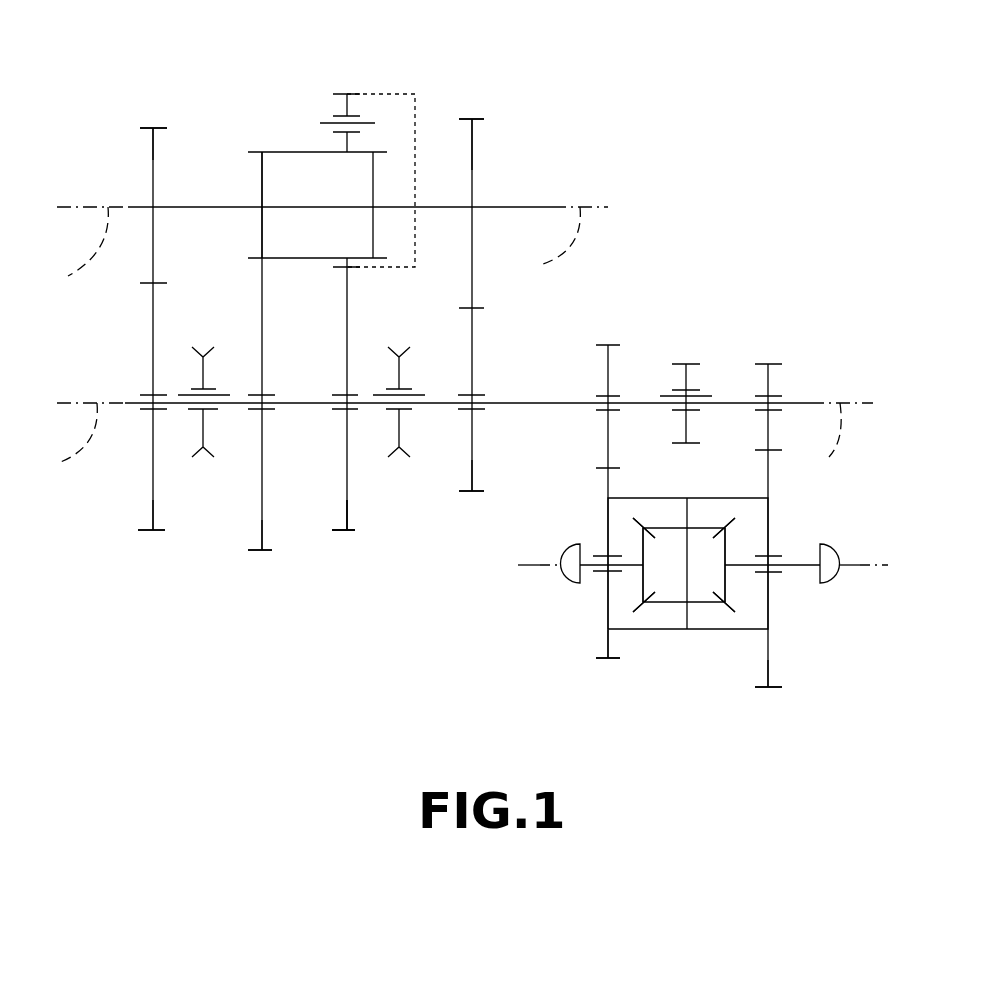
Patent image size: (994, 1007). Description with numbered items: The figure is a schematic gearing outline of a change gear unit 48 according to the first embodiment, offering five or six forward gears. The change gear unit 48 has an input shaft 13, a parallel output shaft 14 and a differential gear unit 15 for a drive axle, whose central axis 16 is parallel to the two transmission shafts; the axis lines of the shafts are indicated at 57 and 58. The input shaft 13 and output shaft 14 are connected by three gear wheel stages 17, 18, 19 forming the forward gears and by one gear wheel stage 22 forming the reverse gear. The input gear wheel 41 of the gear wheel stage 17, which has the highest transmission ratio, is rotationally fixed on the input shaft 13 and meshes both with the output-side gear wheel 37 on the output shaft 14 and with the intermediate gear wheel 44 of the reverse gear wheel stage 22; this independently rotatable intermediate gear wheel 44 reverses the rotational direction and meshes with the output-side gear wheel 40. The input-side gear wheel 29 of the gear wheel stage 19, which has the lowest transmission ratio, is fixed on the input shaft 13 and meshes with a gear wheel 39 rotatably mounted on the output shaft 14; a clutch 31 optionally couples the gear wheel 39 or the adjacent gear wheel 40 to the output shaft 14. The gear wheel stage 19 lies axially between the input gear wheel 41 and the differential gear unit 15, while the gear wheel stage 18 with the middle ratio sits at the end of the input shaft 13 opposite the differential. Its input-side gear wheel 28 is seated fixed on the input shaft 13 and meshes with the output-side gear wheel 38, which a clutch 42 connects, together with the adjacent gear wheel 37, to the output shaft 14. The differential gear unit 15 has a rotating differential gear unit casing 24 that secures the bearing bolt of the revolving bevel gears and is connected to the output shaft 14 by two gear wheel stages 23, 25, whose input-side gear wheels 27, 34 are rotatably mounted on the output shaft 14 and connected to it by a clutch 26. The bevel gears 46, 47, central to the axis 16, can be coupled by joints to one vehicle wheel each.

The input shaft 13 is at (554, 197).
The output shaft 14 is at (526, 399).
The differential gear unit 15 is at (629, 572).
The central axis 16 is at (541, 566).
The gear wheel stage 17 is at (264, 144).
The gear wheel stage 18 is at (156, 118).
The gear wheel stage 19 is at (473, 101).
The gear wheel stage 22 is at (327, 551).
The gear wheel stage 23 is at (602, 667).
The differential gear unit casing 24 is at (687, 498).
The gear wheel stage 25 is at (772, 698).
The clutch 26 is at (695, 344).
The input-side gear wheel 27 is at (602, 343).
The input-side gear wheel 28 is at (153, 163).
The input-side gear wheel 29 is at (473, 168).
The clutch 31 is at (397, 463).
The input-side gear wheel 34 is at (767, 362).
The output-side gear wheel 37 is at (252, 551).
The output-side gear wheel 38 is at (143, 531).
The gear wheel 39 is at (473, 492).
The output-side gear wheel 40 is at (355, 530).
The input gear wheel 41 is at (305, 194).
The clutch 42 is at (201, 463).
The intermediate gear wheel 44 is at (356, 108).
The differential gear unit bevel gear 46 is at (645, 581).
The differential gear unit bevel gear 47 is at (725, 558).
The change gear unit 48 is at (678, 152).
The axis line 57 is at (309, 247).
The axis line 58 is at (431, 445).